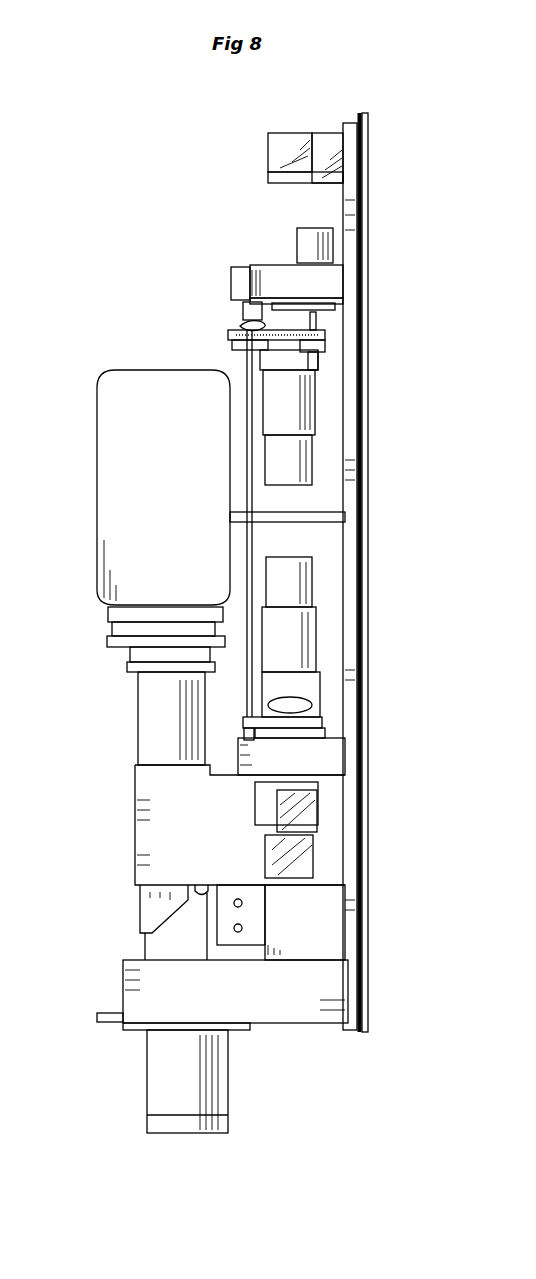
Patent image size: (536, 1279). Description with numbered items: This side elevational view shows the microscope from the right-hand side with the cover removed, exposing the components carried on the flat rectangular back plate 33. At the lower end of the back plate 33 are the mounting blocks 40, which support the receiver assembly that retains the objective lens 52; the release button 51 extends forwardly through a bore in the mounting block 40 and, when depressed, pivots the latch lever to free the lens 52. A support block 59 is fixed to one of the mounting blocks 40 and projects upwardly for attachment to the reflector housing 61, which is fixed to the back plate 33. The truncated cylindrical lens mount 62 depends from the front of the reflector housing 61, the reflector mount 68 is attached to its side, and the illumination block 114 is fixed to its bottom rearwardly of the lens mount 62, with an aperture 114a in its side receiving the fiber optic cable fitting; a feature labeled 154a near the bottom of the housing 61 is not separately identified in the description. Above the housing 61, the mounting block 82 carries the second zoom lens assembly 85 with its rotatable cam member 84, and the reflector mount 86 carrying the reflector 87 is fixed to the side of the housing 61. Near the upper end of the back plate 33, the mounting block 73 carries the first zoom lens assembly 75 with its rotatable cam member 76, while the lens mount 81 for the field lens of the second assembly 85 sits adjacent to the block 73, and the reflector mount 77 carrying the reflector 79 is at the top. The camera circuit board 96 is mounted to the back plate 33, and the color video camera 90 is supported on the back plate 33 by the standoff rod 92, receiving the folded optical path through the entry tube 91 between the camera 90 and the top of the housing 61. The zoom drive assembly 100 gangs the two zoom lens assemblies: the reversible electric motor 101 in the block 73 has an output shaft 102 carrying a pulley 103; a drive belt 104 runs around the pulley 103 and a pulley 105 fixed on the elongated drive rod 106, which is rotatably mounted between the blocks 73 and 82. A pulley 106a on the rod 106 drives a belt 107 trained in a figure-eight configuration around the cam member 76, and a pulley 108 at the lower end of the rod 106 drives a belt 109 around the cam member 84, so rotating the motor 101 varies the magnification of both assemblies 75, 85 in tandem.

The back plate 33 is at (368, 463).
The reflector mount 77 is at (330, 140).
The reflector 79 is at (268, 150).
The reversible electric motor 101 is at (312, 240).
The lens mount 81 is at (345, 282).
The mounting block 73 is at (231, 278).
The belt 107 is at (286, 322).
The pulley 106a is at (243, 312).
The zoom drive assembly 100 is at (200, 314).
The output shaft 102 is at (318, 323).
The drive belt 104 is at (228, 335).
The pulley 103 is at (325, 346).
The pulley 105 is at (240, 350).
The rotatable cam member 76 is at (318, 363).
The first zoom lens assembly 75 is at (325, 420).
The color video camera 90 is at (97, 442).
The elongated drive rod 106 is at (247, 487).
The standoff rod 92 is at (345, 512).
The second zoom lens assembly 85 is at (330, 633).
The rotatable cam member 84 is at (320, 690).
The belt 109 is at (322, 723).
The pulley 108 is at (244, 733).
The mounting block 82 is at (340, 756).
The entry tube 91 is at (138, 700).
The reflector housing 61 is at (126, 801).
The reflector mount 86 is at (345, 800).
The reflector 87 is at (318, 815).
The reflector mount 68 is at (313, 856).
The camera circuit board 96 is at (340, 920).
The illumination block 114 is at (265, 920).
The aperture 114a is at (238, 898).
The notch 154a is at (200, 882).
The lens mount 62 is at (140, 915).
The support block 59 is at (145, 948).
The mounting blocks 40 is at (275, 1023).
The release button 51 is at (110, 1022).
The objective lens 52 is at (150, 1089).